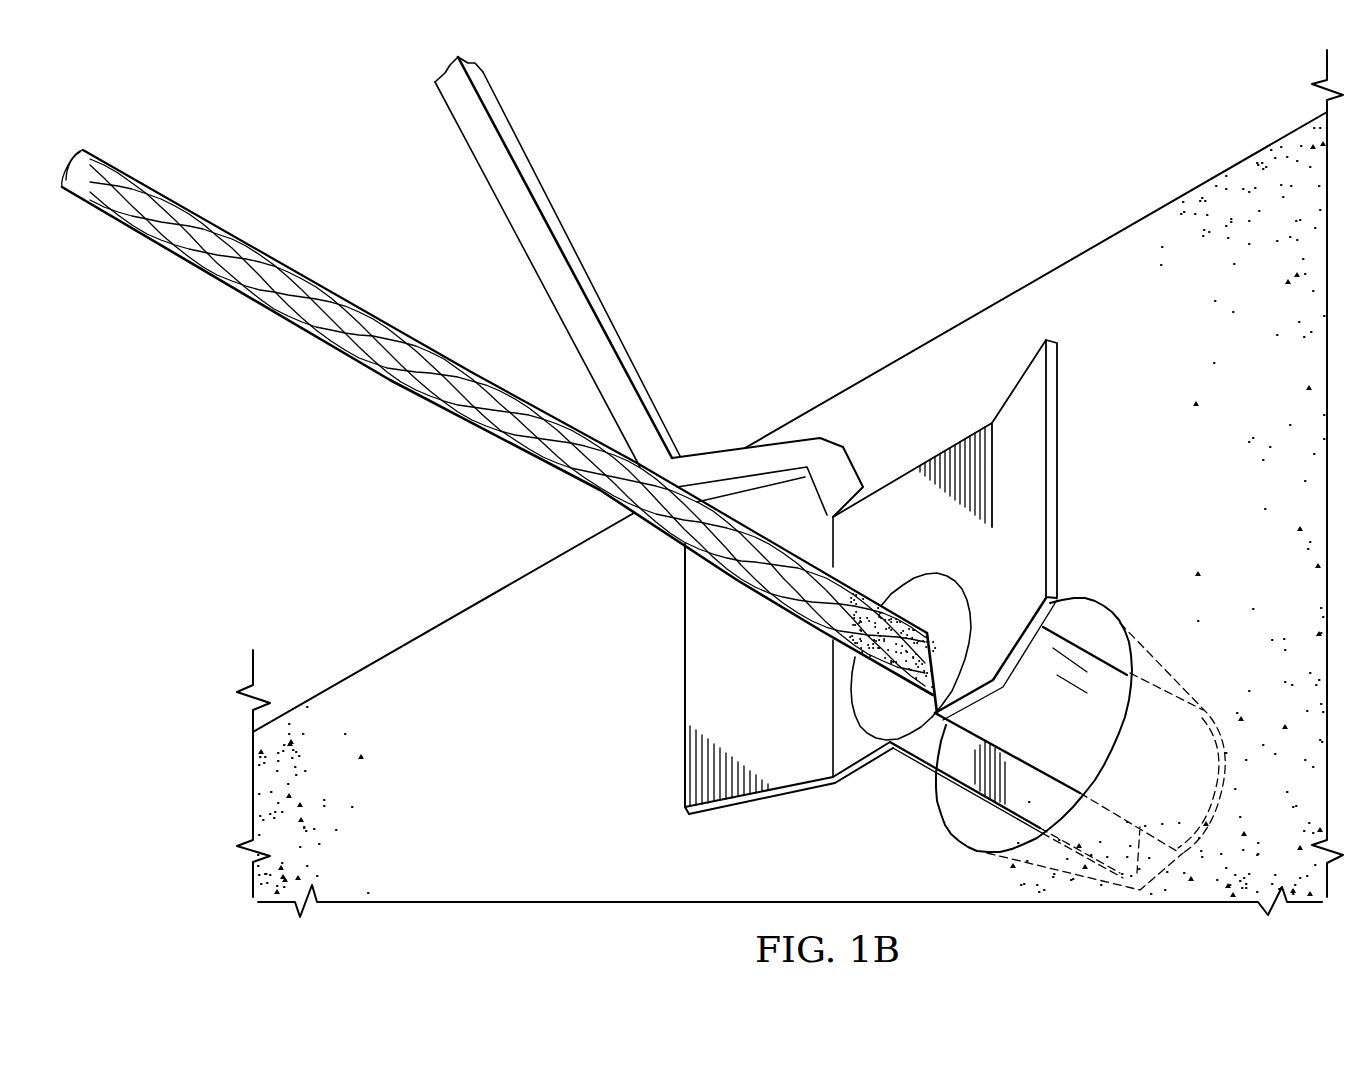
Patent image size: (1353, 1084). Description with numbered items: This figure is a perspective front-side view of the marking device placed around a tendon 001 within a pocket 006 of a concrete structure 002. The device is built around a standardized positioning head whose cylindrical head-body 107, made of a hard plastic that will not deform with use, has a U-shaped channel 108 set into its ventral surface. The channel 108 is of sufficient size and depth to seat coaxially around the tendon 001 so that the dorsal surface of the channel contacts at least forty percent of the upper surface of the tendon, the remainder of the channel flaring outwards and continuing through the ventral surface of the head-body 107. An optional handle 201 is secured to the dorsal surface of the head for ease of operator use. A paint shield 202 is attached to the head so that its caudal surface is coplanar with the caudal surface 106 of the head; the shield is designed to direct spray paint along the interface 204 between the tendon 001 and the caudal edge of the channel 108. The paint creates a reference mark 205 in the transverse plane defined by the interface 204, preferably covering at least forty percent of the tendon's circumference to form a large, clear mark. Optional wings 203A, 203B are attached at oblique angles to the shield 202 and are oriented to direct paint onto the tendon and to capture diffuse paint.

The tendon 001 is at (232, 290).
The concrete structure 002 is at (1088, 250).
The handle 201 is at (566, 238).
The paint shield 202 is at (933, 458).
The wing 203A is at (682, 665).
The wing 203B is at (1058, 467).
The interface 204 is at (936, 586).
The reference mark 205 is at (870, 598).
The pocket 006 is at (1110, 612).
The caudal surface of the head 106 is at (868, 682).
The cylindrical head-body 107 is at (1083, 735).
The channel 108 is at (927, 733).